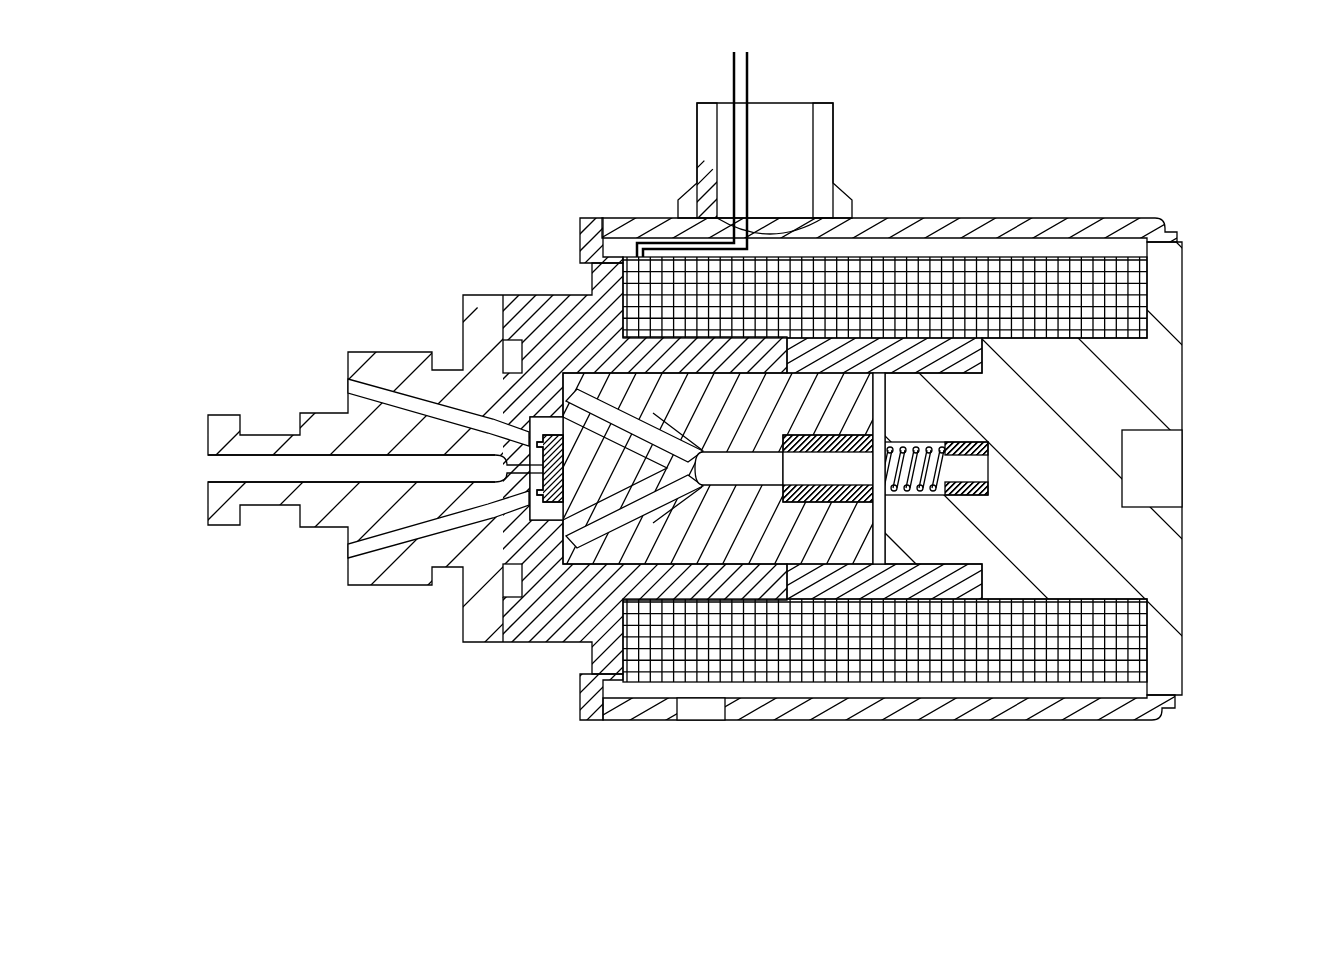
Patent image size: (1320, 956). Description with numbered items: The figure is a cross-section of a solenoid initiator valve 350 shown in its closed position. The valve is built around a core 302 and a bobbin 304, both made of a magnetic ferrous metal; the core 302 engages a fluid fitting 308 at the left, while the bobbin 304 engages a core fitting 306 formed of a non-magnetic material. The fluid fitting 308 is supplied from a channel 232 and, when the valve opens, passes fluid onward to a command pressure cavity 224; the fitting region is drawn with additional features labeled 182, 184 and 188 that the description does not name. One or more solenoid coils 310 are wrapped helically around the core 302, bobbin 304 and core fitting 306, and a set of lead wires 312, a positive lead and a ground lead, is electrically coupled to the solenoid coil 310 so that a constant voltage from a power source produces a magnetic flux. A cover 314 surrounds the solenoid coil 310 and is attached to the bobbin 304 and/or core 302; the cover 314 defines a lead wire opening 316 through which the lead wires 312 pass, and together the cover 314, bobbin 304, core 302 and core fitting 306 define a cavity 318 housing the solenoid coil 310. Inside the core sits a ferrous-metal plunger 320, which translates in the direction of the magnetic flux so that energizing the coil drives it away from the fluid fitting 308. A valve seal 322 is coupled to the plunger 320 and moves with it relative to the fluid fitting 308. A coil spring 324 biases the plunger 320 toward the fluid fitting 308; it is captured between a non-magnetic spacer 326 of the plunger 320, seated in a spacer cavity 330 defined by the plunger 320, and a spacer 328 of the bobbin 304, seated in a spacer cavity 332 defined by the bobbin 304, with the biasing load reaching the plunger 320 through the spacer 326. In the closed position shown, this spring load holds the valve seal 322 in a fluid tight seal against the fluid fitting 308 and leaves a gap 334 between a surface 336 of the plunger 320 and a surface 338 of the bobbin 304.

The solenoid initiator valve 350 is at (484, 115).
The core 302 is at (562, 300).
The valve seat body 182 is at (350, 385).
The inlet passages 184 is at (412, 388).
The outlet bore 188 is at (212, 462).
The command pressure cavity 224 is at (218, 470).
The channel 232 is at (338, 381).
The fluid fitting 308 is at (392, 372).
The bobbin 304 is at (1045, 479).
The core fitting 306 is at (970, 355).
The solenoid coil 310 is at (1147, 295).
The lead wires 312 is at (745, 83).
The cover 314 is at (1087, 235).
The lead wire opening 316 is at (828, 200).
The cavity 318 is at (1040, 700).
The plunger 320 is at (710, 426).
The valve seal 322 is at (552, 478).
The coil spring 324 is at (928, 447).
The spacer 326 is at (802, 494).
The spacer 328 is at (975, 490).
The spacer cavity 330 is at (840, 520).
The spacer cavity 332 is at (930, 492).
The gap 334 is at (930, 417).
The surface 336 is at (880, 523).
The surface 338 is at (883, 390).